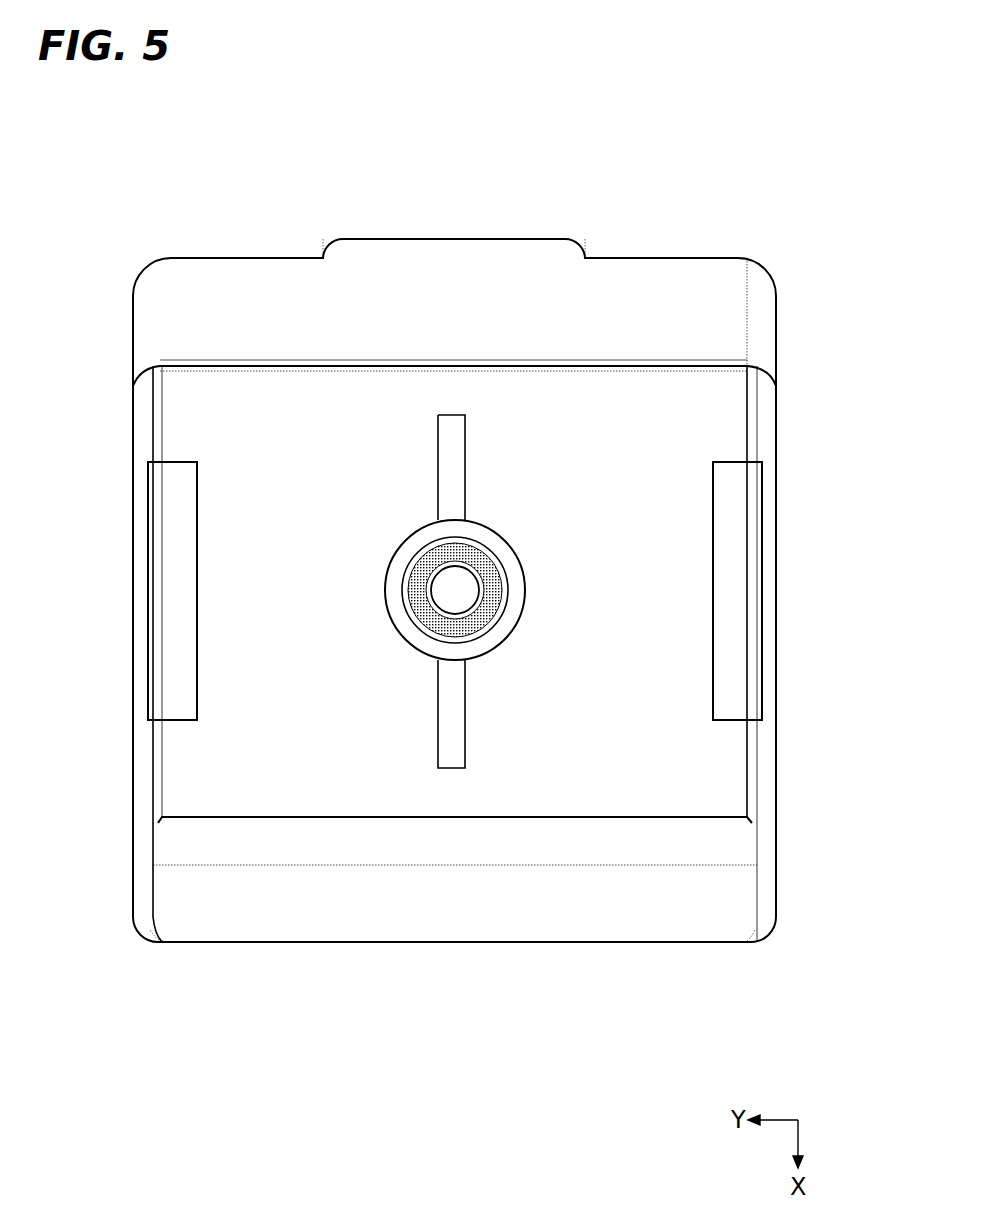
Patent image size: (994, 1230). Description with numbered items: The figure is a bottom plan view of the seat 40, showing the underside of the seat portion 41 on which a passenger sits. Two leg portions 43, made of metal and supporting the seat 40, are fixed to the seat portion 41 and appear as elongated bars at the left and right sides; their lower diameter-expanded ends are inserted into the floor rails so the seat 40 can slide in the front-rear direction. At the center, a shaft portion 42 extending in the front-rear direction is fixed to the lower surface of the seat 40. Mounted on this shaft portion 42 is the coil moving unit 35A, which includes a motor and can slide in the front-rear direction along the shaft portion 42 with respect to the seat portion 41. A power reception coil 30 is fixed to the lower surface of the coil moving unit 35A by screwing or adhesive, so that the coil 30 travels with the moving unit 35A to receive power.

The seat 40 is at (723, 228).
The seat portion 41 is at (718, 428).
The shaft portion 42 is at (455, 450).
The leg portions 43 is at (172, 598).
The power reception coil 30 is at (493, 565).
The coil moving unit 35A is at (529, 598).